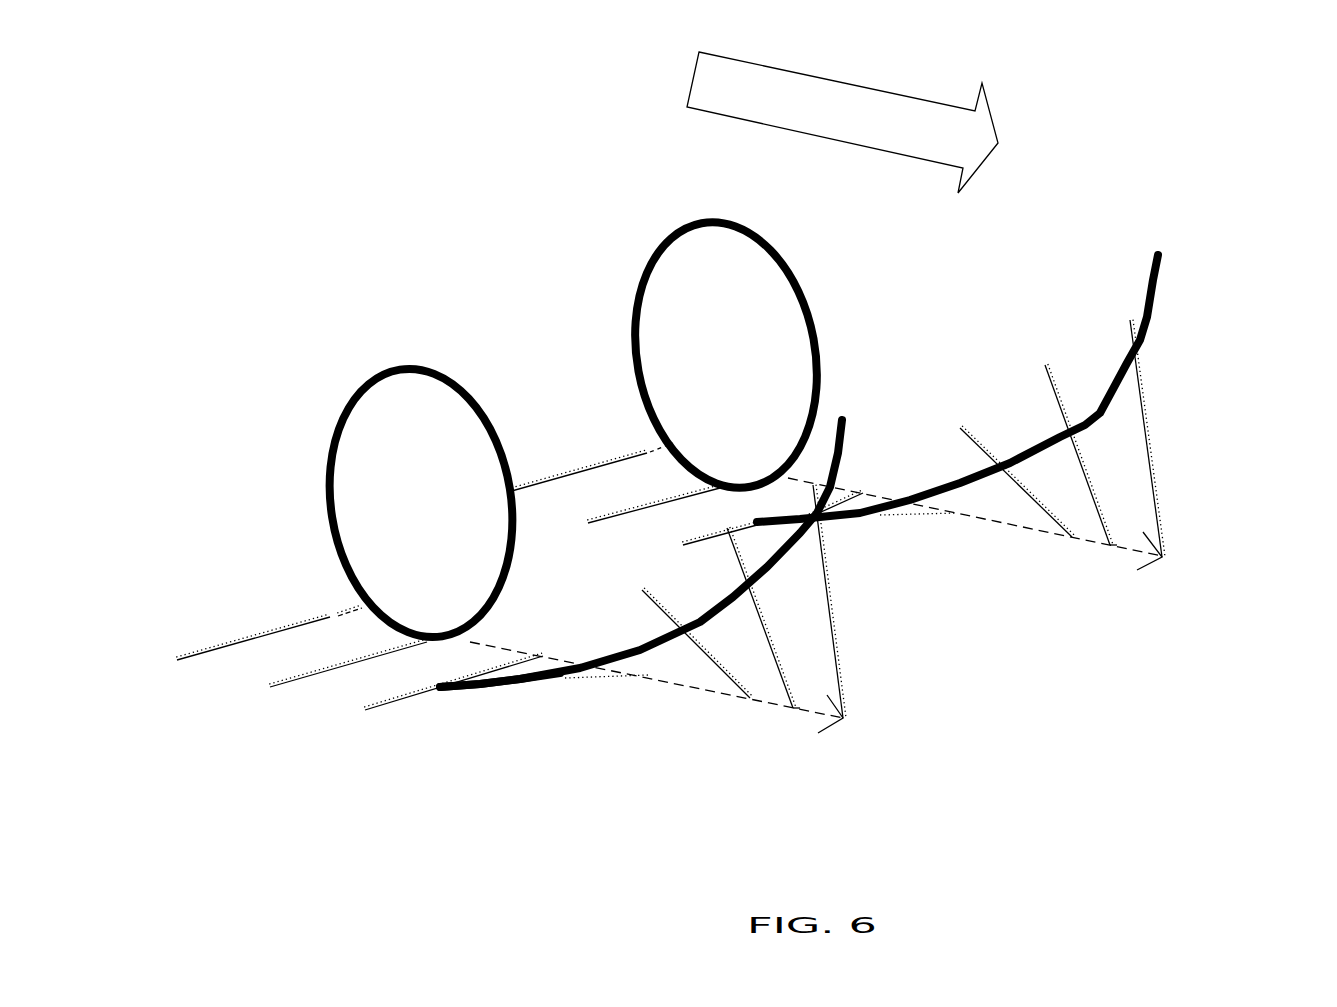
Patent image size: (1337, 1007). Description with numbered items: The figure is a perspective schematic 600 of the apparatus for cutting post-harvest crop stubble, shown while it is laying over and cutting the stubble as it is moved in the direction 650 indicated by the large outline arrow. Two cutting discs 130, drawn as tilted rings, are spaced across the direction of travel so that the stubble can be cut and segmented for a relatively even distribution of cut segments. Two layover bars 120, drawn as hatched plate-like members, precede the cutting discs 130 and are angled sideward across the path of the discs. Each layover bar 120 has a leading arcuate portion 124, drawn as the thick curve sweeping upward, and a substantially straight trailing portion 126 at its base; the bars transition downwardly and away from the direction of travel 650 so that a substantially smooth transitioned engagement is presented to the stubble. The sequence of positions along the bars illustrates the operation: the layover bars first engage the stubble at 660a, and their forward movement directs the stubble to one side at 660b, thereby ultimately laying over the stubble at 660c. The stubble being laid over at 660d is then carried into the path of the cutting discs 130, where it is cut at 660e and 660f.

The perspective schematic 600 is at (348, 149).
The direction of travel 650 is at (846, 107).
The cutting disc 130 is at (380, 418).
The layover bar 120 is at (697, 617).
The leading arcuate portion 124 is at (845, 437).
The trailing portion 126 is at (493, 690).
The stubble engagement location 660a is at (838, 653).
The stubble sideways direction location 660b is at (733, 685).
The stubble laying over location 660c is at (405, 700).
The laid over stubble location 660d is at (302, 680).
The stubble cutting location 660e is at (350, 604).
The stubble cutting location 660f is at (260, 635).